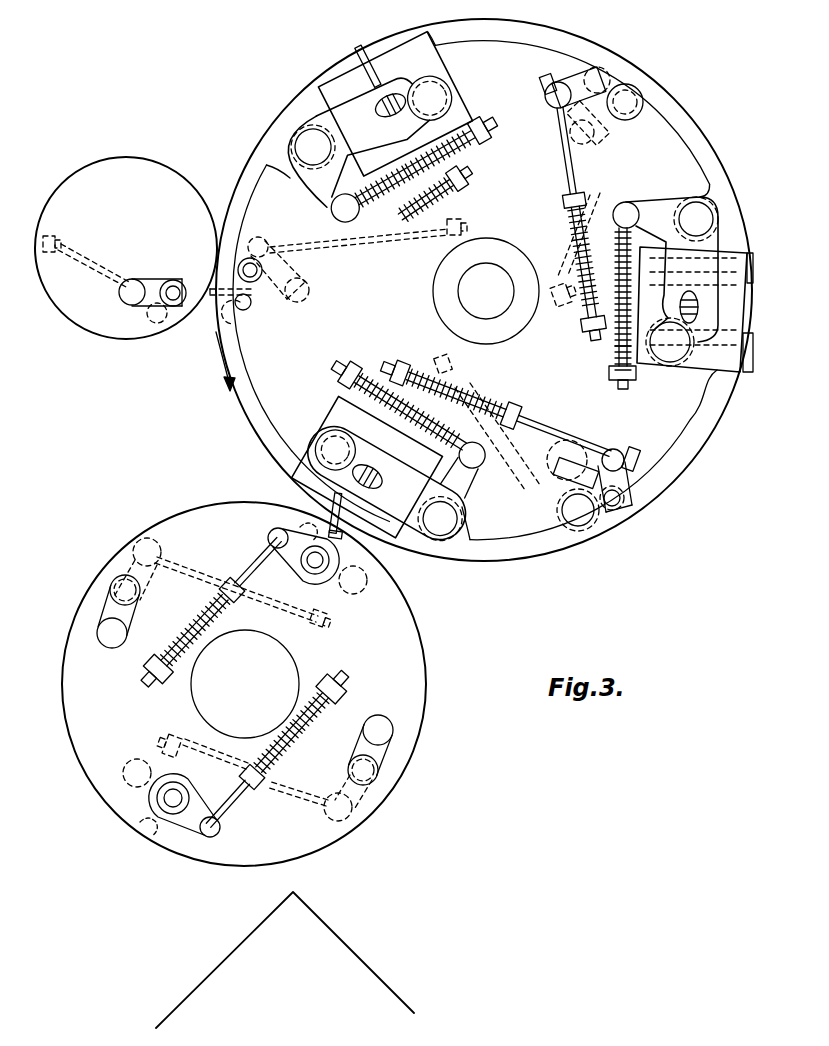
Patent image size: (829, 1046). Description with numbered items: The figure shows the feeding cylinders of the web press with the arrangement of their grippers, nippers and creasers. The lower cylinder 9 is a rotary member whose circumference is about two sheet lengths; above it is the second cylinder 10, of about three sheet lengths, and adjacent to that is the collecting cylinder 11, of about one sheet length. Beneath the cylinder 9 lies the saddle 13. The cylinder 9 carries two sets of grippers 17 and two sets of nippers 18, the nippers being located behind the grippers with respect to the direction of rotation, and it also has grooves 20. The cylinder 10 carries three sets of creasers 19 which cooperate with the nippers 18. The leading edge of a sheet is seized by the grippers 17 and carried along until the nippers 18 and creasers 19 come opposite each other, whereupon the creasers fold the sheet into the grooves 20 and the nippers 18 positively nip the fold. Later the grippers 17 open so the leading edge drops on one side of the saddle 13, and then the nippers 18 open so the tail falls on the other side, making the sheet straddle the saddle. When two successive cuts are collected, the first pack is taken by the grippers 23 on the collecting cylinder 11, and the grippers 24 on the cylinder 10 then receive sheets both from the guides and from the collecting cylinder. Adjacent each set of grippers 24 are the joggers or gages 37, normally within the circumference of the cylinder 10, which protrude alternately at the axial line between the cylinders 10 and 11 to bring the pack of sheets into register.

The cylinder 9 is at (244, 684).
The second cylinder 10 is at (484, 290).
The collecting cylinder 11 is at (126, 248).
The saddle 13 is at (285, 960).
The grippers 17 is at (92, 594).
The nippers 18 is at (318, 523).
The creasers 19 is at (358, 49).
The grooves 20 is at (363, 543).
The grippers 23 is at (215, 300).
The grippers 24 is at (612, 72).
The joggers or gages 37 is at (238, 315).